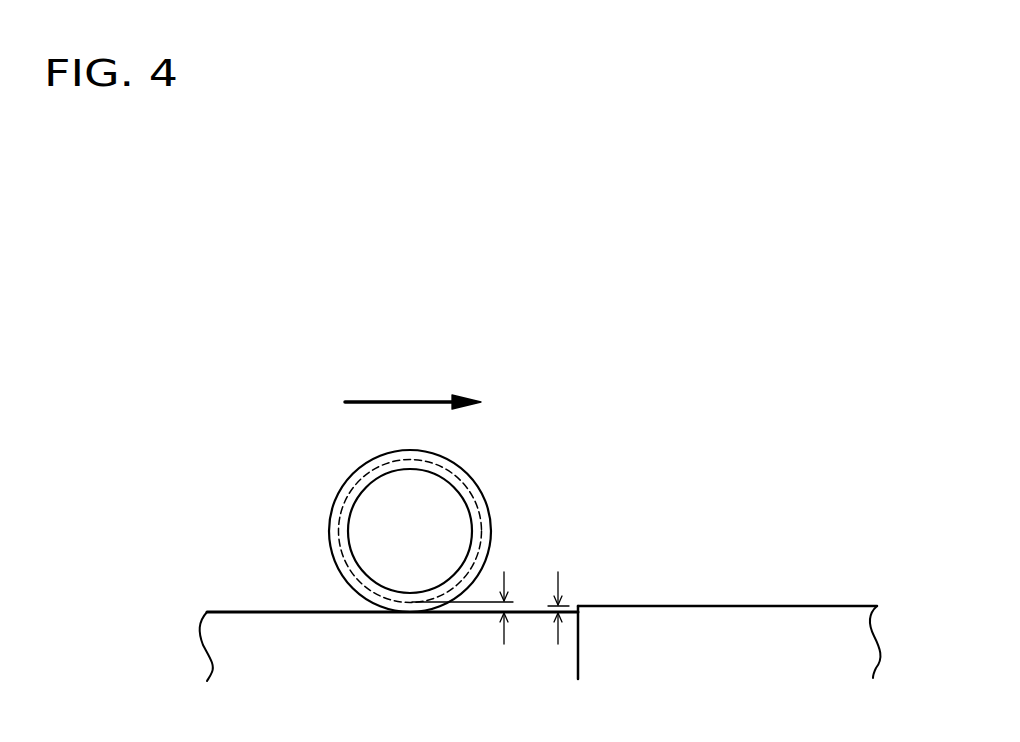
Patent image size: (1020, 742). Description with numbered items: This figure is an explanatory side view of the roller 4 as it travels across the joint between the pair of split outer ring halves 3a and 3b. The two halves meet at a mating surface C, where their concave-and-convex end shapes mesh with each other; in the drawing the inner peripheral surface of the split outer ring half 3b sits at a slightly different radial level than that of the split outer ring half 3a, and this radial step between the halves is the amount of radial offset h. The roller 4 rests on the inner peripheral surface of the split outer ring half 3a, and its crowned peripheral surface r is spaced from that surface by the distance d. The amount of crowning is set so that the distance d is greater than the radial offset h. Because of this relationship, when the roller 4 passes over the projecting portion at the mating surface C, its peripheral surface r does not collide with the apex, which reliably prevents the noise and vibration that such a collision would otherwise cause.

The roller 4 is at (349, 473).
The peripheral surface of the roller r is at (478, 490).
The split outer ring half 3a is at (263, 645).
The split outer ring half 3b is at (746, 627).
The mating surface C is at (578, 648).
The distance d is at (466, 597).
The amount of radial offset h is at (561, 601).